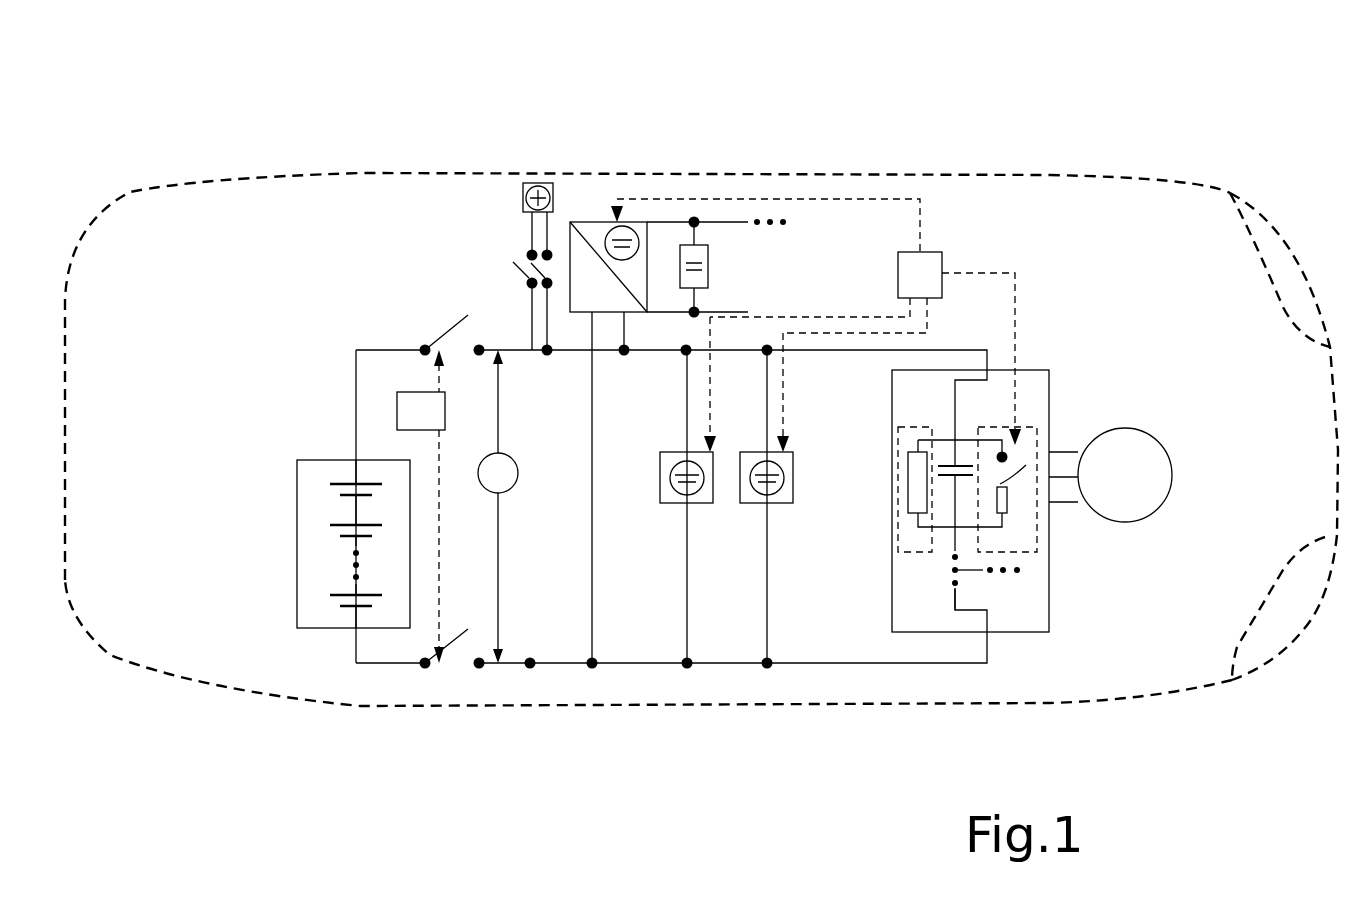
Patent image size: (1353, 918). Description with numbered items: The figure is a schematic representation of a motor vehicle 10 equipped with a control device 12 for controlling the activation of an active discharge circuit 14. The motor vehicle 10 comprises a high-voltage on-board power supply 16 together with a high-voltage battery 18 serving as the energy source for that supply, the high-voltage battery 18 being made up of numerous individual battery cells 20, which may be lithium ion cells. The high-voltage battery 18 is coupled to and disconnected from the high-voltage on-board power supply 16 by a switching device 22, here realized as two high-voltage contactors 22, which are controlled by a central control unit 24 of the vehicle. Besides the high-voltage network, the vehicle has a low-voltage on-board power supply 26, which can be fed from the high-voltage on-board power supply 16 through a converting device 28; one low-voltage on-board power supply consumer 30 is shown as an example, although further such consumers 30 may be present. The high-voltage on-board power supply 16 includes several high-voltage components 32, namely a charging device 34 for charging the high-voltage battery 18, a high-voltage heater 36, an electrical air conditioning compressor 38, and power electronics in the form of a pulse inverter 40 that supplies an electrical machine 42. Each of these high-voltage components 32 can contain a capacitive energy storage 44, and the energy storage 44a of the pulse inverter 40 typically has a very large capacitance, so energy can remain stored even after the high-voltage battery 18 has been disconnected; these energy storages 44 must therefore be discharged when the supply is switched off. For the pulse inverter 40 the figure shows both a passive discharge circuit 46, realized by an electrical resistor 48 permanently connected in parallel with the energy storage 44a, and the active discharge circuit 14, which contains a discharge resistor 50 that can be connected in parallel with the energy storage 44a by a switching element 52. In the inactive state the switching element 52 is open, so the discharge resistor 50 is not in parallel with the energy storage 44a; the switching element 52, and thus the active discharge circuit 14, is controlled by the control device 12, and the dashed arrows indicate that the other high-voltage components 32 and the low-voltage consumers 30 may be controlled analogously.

The motor vehicle 10 is at (1091, 158).
The control device 12 is at (938, 242).
The active discharge circuit 14 is at (1051, 434).
The high-voltage on-board power supply 16 is at (496, 296).
The high-voltage battery 18 is at (331, 496).
The battery cells 20 is at (340, 595).
The switching device 22 is at (440, 335).
The central control unit 24 is at (407, 392).
The low-voltage on-board power supply 26 is at (772, 206).
The converting device 28 is at (745, 399).
The low-voltage on-board power supply consumer 30 is at (708, 268).
The high-voltage components 32 is at (597, 222).
The charging device 34 is at (558, 205).
The high-voltage heater 36 is at (670, 503).
The electrical air conditioning compressor 38 is at (790, 503).
The pulse inverter 40 is at (976, 473).
The electrical machine 42 is at (1125, 428).
The capacitive energy storages 44 is at (522, 192).
The energy storage of the pulse inverter 44a is at (950, 465).
The passive discharge circuit 46 is at (880, 533).
The electrical resistor 48 is at (907, 490).
The discharge resistor 50 is at (1007, 500).
The switching element 52 is at (1025, 460).